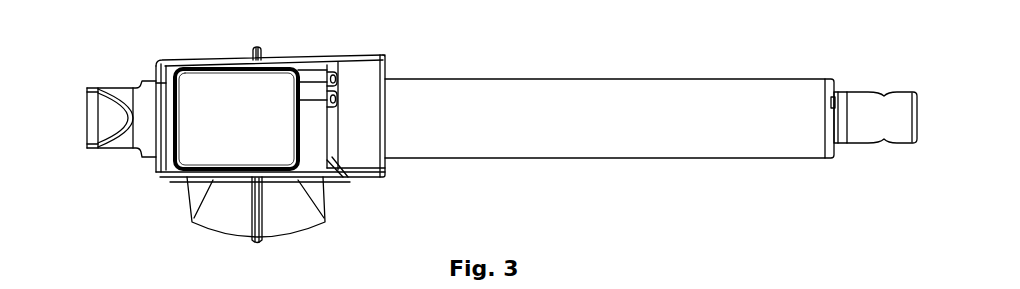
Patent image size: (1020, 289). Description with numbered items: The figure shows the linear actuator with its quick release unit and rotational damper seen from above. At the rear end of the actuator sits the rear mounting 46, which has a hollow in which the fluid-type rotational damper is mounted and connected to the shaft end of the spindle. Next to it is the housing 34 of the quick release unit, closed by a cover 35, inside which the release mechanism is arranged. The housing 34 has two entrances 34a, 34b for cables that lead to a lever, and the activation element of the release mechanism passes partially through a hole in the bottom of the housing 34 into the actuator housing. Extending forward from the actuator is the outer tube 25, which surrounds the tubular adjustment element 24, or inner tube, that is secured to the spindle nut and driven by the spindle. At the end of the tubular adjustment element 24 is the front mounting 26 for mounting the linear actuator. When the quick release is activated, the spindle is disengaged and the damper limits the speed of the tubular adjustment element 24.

The tubular adjustment element 24 is at (838, 107).
The outer tube 25 is at (585, 92).
The front mounting 26 is at (913, 102).
The housing 34 is at (330, 157).
The entrance 34a is at (333, 76).
The entrance 34b is at (333, 101).
The cover 35 is at (222, 83).
The rear mounting 46 is at (97, 110).